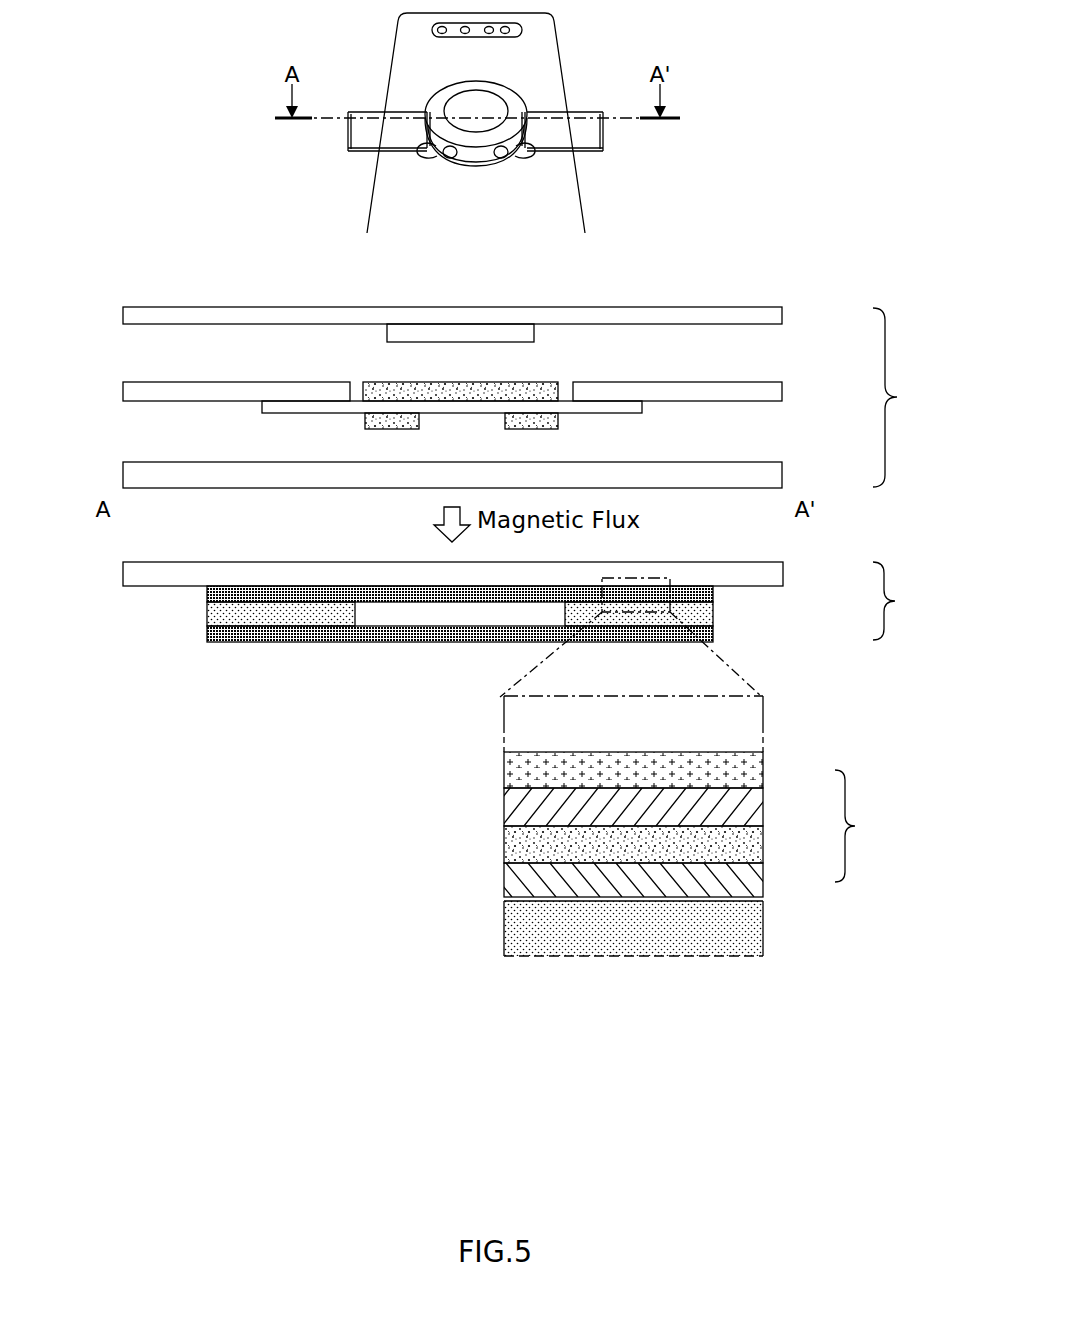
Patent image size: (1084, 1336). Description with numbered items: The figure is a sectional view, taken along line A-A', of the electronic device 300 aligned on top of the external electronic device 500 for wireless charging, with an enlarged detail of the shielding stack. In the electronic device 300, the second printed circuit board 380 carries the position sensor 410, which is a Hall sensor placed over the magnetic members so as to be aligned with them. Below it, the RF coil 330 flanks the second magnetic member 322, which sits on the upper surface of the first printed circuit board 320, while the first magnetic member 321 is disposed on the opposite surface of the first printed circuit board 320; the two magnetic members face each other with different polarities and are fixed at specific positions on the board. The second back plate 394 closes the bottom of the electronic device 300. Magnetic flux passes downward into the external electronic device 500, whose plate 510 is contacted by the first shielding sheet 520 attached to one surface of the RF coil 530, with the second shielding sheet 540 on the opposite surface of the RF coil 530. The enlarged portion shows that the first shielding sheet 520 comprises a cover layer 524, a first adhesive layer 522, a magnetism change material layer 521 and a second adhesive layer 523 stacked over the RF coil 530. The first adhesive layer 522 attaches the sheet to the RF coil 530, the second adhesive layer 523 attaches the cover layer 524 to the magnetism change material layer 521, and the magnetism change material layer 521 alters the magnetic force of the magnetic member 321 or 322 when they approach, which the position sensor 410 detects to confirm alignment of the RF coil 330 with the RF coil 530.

The external electronic device 500 is at (412, 53).
The electronic device 300 is at (585, 136).
The second printed circuit board 380 is at (782, 316).
The position sensor 410 is at (534, 333).
The RF coil 330 is at (123, 391).
The second magnetic member 322 is at (390, 381).
The first printed circuit board 320 is at (642, 407).
The first magnetic member 321 is at (419, 421).
The second back plate 394 is at (782, 473).
The plate 510 is at (123, 571).
The first shielding sheet 520 is at (713, 595).
The RF coil 530 is at (713, 620).
The second shielding sheet 540 is at (713, 645).
The magnetism change material layer 521 is at (753, 847).
The first adhesive layer 522 is at (753, 810).
The second adhesive layer 523 is at (753, 883).
The cover layer 524 is at (753, 773).